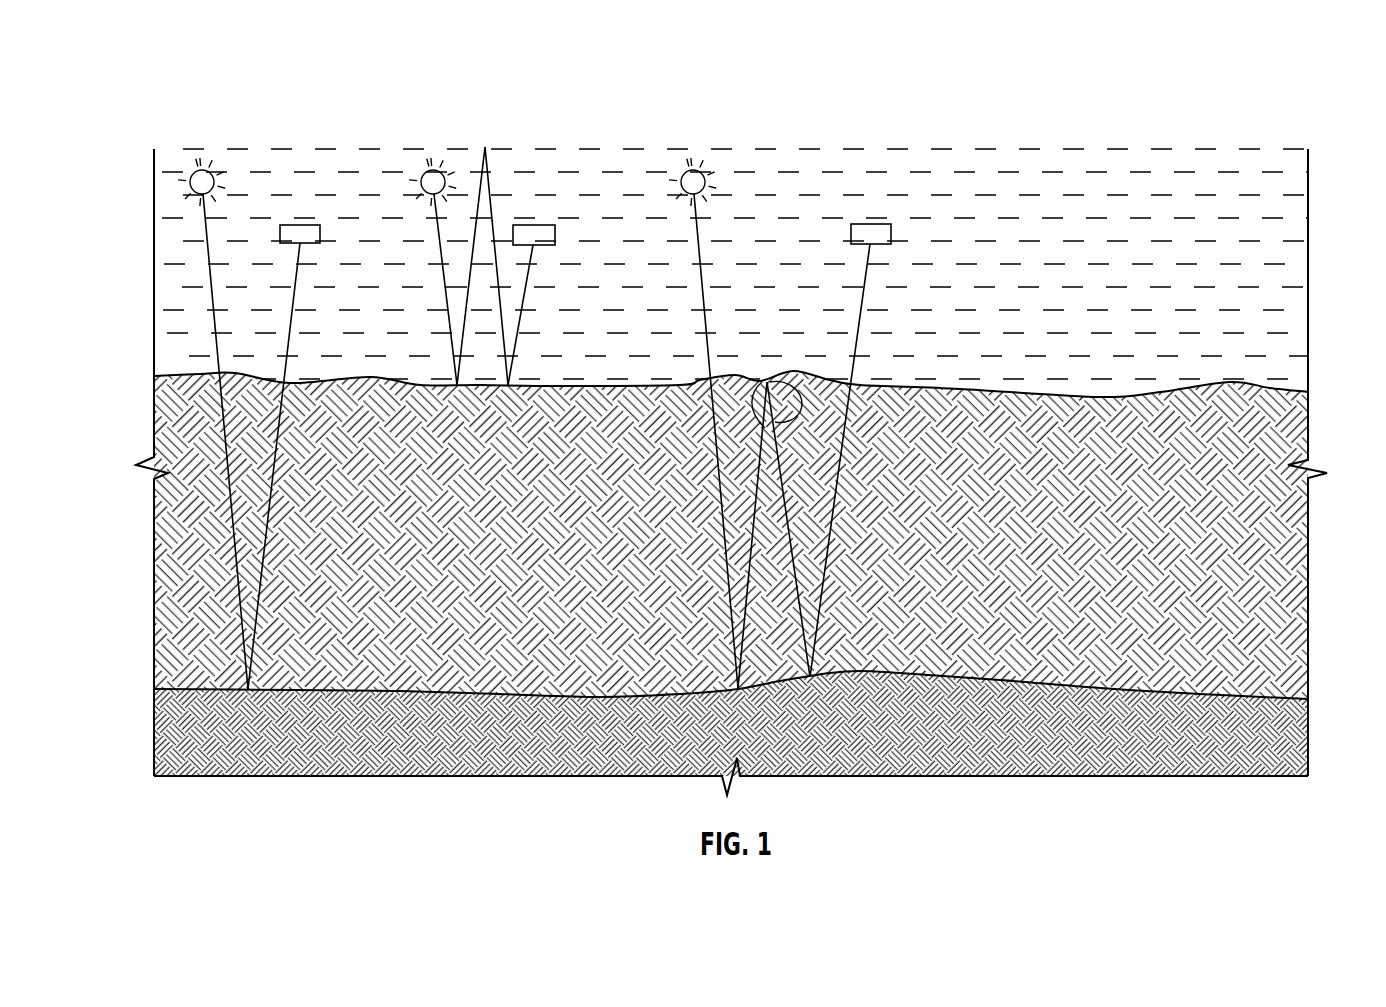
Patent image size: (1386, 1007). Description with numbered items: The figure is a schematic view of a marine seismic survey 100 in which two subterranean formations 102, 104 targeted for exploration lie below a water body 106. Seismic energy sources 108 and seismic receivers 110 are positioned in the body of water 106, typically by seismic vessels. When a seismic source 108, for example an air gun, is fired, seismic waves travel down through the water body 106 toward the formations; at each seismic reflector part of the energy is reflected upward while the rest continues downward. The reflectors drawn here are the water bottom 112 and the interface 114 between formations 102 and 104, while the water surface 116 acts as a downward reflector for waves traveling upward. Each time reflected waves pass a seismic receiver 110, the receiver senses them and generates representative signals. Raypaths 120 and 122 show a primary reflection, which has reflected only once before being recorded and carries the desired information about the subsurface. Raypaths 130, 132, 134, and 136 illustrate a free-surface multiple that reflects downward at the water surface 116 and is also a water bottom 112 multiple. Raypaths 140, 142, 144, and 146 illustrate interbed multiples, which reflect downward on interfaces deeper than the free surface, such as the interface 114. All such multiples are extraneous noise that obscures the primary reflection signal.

The marine seismic survey 100 is at (245, 69).
The subterranean formation 102 is at (715, 542).
The subterranean formation 104 is at (715, 751).
The water body 106 is at (387, 360).
The seismic energy source 108 is at (200, 171).
The seismic receiver 110 is at (300, 224).
The water bottom 112 is at (1282, 392).
The interface 114 is at (1277, 699).
The water surface 116 is at (1250, 148).
The raypath 120 is at (208, 302).
The raypath 122 is at (298, 292).
The raypath 130 is at (452, 300).
The raypath 132 is at (466, 294).
The raypath 134 is at (490, 165).
The raypath 136 is at (525, 297).
The raypath 140 is at (705, 298).
The raypath 142 is at (762, 384).
The raypath 144 is at (813, 378).
The raypath 146 is at (862, 318).